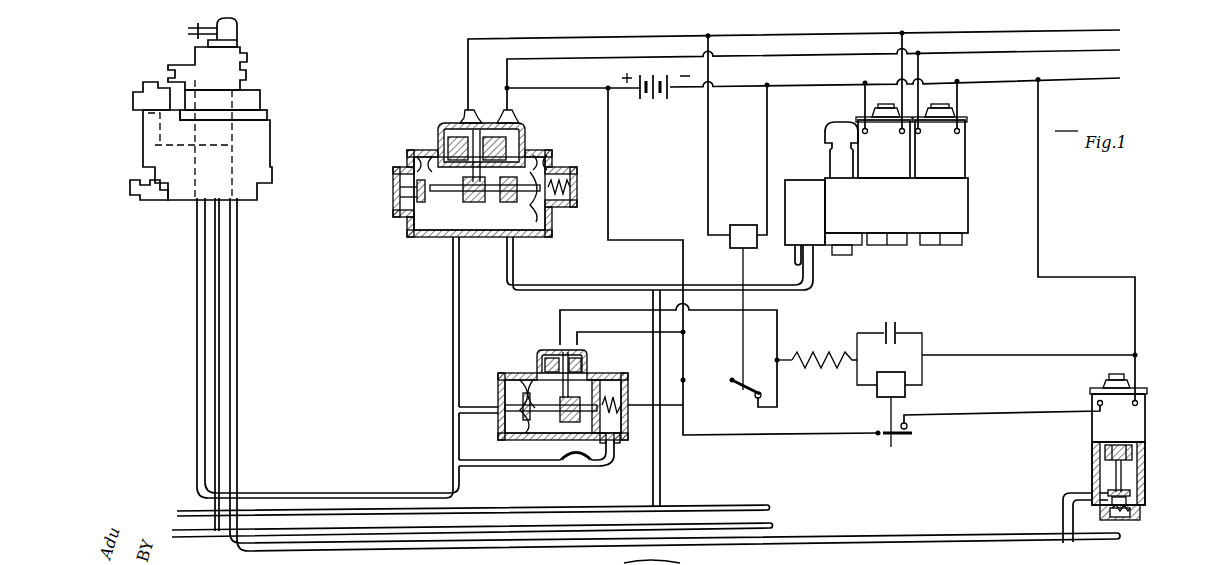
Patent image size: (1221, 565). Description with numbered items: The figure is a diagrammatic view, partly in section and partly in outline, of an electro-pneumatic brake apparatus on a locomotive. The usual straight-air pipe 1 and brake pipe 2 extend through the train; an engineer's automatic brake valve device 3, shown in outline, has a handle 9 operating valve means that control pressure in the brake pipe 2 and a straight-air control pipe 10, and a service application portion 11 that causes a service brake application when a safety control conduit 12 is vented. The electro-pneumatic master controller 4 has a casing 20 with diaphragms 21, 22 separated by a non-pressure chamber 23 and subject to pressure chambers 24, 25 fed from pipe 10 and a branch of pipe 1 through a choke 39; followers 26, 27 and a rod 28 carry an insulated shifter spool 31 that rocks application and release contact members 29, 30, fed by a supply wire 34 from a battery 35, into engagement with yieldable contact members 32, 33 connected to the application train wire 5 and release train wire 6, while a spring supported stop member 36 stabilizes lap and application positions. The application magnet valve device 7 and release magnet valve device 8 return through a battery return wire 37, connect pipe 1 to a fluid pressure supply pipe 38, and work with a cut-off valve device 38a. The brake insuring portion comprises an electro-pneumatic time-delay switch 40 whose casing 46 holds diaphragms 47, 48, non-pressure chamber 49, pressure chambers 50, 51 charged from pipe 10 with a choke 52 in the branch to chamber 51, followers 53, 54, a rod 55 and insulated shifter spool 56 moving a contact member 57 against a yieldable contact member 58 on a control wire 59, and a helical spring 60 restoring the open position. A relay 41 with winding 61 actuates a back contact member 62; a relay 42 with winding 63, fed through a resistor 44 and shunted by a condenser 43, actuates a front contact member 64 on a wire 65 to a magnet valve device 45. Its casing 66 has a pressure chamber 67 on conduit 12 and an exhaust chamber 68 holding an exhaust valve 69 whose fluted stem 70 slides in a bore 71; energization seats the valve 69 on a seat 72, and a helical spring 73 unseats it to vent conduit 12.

The straight-air pipe 1 is at (670, 287).
The brake pipe 2 is at (775, 525).
The engineer's automatic brake valve device 3 is at (298, 85).
The electro-pneumatic master controller 4 is at (425, 121).
The application train wire 5 is at (516, 36).
The release train wire 6 is at (555, 60).
The application magnet valve device 7 is at (880, 100).
The release magnet valve device 8 is at (975, 141).
The handle 9 is at (190, 31).
The straight-air control pipe 10 is at (197, 300).
The service application portion 11 is at (140, 107).
The safety control conduit 12 is at (236, 259).
The sectionalized hollow casing 20 is at (535, 160).
The flexible diaphragm 21 is at (420, 153).
The flexible diaphragm 22 is at (548, 168).
The non-pressure chamber 23 is at (448, 216).
The pressure chamber 24 is at (396, 183).
The pressure chamber 25 is at (560, 216).
The follower 26 is at (419, 193).
The follower 27 is at (532, 216).
The rod 28 is at (400, 163).
The application contact member 29 is at (477, 204).
The release contact member 30 is at (532, 163).
The insulated shifter spool 31 is at (506, 205).
The yieldable application contact member 32 is at (449, 123).
The yieldable release contact member 33 is at (520, 136).
The supply wire 34 is at (484, 88).
The battery 35 is at (662, 94).
The spring supported stop member 36 is at (577, 176).
The battery return wire 37 is at (766, 88).
The fluid pressure supply pipe 38 is at (795, 258).
The cut-off valve device 38a is at (820, 163).
The choke 39 is at (548, 237).
The electro-pneumatic time-delay switch 40 is at (501, 364).
The relay 41 is at (718, 275).
The relay 42 is at (861, 415).
The condenser 43 is at (897, 325).
The resistor 44 is at (815, 352).
The magnet valve device 45 is at (1159, 430).
The sectionalized hollow casing 46 is at (590, 374).
The flexible diaphragm 47 is at (514, 436).
The flexible diaphragm 48 is at (622, 393).
The non-pressure chamber 49 is at (547, 424).
The pressure chamber 50 is at (505, 381).
The pressure chamber 51 is at (618, 445).
The choke 52 is at (606, 463).
The follower 53 is at (523, 405).
The follower 54 is at (616, 415).
The rod 55 is at (526, 378).
The insulated shifter spool 56 is at (571, 460).
The movable contact member 57 is at (579, 340).
The yieldable contact member 58 is at (548, 353).
The control wire 59 is at (777, 362).
The helical spring 60 is at (655, 405).
The winding 61 is at (750, 225).
The back contact member 62 is at (745, 389).
The winding 63 is at (882, 372).
The front contact member 64 is at (900, 435).
The wire 65 is at (995, 414).
The sectionalized casing 66 is at (1138, 451).
The pressure chamber 67 is at (1140, 501).
The exhaust chamber 68 is at (1138, 466).
The exhaust valve 69 is at (1095, 471).
The fluted stem 70 is at (1140, 486).
The bore 71 is at (1108, 491).
The seat 72 is at (1112, 447).
The helical spring 73 is at (1130, 520).